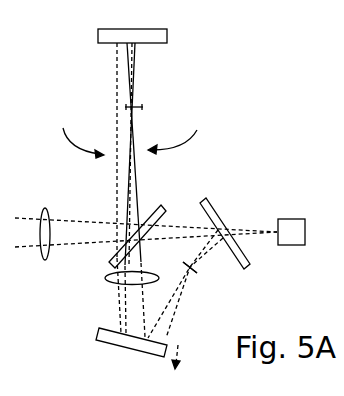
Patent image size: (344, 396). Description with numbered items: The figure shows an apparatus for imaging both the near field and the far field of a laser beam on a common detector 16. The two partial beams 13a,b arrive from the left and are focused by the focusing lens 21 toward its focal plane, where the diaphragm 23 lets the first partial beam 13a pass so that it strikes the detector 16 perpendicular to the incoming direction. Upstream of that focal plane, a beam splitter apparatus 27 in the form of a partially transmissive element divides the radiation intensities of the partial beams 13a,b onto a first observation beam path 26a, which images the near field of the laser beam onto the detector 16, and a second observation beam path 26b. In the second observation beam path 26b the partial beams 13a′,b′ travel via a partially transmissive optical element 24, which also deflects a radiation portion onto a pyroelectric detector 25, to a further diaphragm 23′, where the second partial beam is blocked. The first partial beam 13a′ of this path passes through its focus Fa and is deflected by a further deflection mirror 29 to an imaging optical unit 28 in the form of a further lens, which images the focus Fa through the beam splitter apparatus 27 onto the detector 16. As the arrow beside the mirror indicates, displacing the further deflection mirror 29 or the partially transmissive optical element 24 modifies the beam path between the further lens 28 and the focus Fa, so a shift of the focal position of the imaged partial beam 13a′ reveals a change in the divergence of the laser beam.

The detector 16 is at (108, 38).
The first partial beam 13a is at (133, 58).
The first partial beam of the second observation beam path 13a′ is at (117, 100).
The diaphragm / focal plane 23 is at (143, 107).
The second observation beam path 26b is at (71, 135).
The first observation beam path 26a is at (185, 135).
The focusing lens 21 is at (43, 208).
The partial beams 13a,b is at (82, 230).
The beam splitter apparatus 27 is at (165, 206).
The partially transmissive optical element 24 is at (217, 215).
The pyroelectric detector 25 is at (290, 226).
The focus of the first partial beam Fa is at (188, 266).
The imaging optical unit / further lens 28 is at (107, 278).
The partial beams of the second observation beam path 13a′,b′ is at (218, 246).
The further diaphragm 23′ is at (197, 273).
The further deflection mirror 29 is at (108, 337).